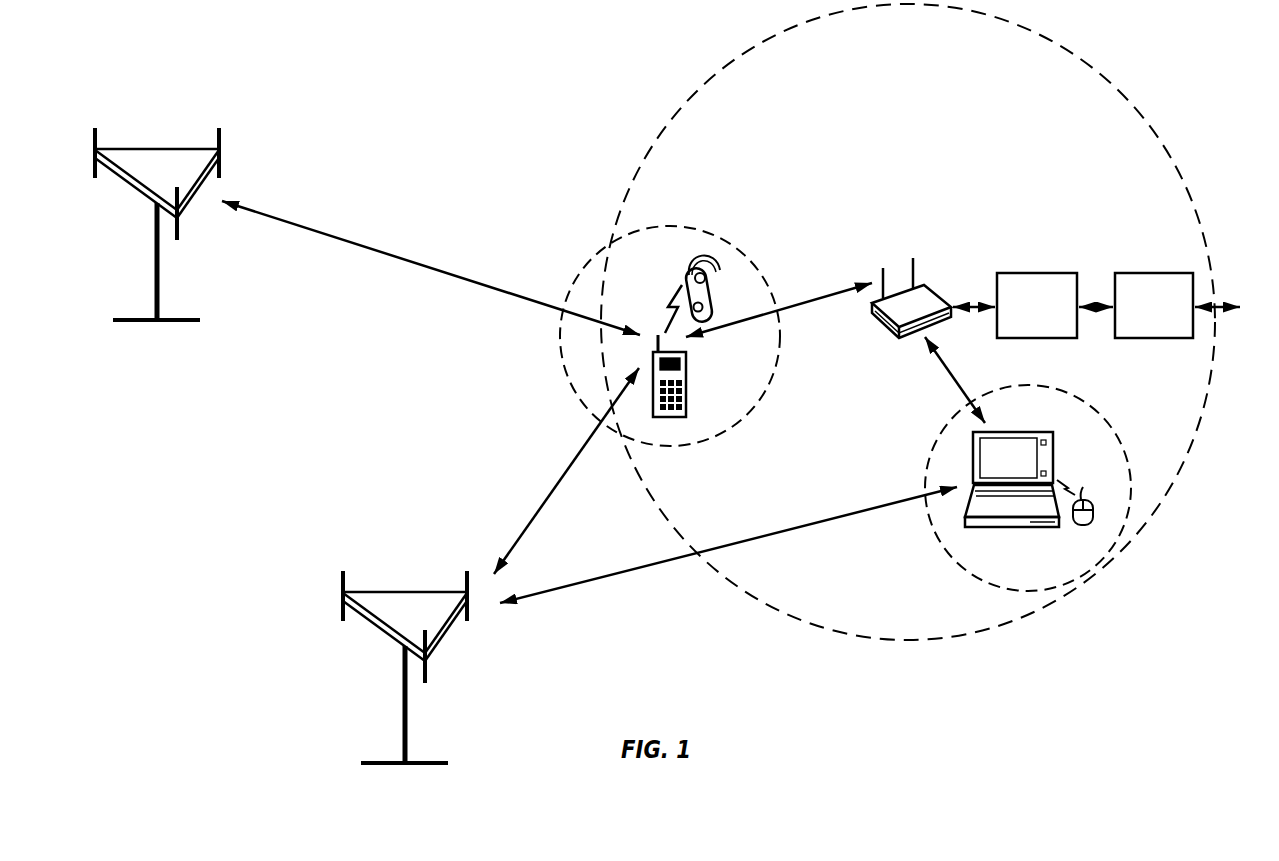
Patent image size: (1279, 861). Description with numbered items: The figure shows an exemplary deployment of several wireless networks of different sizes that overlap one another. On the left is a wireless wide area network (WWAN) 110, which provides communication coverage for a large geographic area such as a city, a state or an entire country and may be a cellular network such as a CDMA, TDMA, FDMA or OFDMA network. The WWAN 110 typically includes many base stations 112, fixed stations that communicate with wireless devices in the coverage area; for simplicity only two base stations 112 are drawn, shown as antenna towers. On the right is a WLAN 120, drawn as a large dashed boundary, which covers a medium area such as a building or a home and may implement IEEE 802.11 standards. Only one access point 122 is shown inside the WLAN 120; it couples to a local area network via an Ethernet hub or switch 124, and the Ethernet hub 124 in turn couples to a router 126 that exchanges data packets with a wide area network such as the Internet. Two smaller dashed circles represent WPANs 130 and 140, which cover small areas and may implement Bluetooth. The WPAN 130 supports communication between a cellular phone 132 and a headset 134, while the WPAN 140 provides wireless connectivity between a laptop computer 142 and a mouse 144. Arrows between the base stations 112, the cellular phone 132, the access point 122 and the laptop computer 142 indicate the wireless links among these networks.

The wireless wide area network (WWAN) 110 is at (284, 129).
The base station 112 is at (150, 149).
The WLAN 120 is at (1087, 66).
The access point 122 is at (931, 289).
The Ethernet hub 124 is at (1030, 273).
The router 126 is at (1147, 273).
The WPAN 130 is at (668, 226).
The cellular phone 132 is at (688, 382).
The headset 134 is at (710, 290).
The WPAN 140 is at (1099, 411).
The laptop computer 142 is at (1008, 432).
The mouse 144 is at (1090, 498).